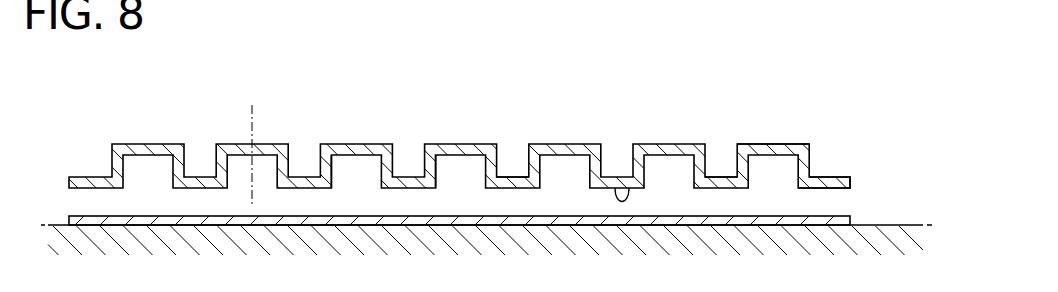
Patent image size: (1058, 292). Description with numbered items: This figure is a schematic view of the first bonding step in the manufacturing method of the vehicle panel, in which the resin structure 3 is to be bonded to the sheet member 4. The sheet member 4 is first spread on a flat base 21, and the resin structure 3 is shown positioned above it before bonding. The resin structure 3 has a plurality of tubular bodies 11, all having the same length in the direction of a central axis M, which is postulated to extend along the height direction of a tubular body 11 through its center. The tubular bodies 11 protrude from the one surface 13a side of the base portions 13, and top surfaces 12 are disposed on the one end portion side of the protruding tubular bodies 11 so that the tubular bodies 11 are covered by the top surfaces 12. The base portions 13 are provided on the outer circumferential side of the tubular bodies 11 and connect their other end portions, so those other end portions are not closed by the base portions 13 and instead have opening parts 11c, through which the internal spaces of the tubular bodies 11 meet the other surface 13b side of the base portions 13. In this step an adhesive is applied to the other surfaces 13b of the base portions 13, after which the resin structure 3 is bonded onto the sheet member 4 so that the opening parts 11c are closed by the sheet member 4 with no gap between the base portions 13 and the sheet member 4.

The resin structure 3 is at (855, 183).
The sheet member 4 is at (852, 224).
The tubular body 11 is at (810, 157).
The opening part 11c is at (435, 177).
The top surface 12 is at (767, 143).
The base portion 13 is at (718, 180).
The one surface 13a is at (512, 177).
The other surface 13b is at (624, 190).
The flat base 21 is at (887, 224).
The central axis M is at (253, 142).